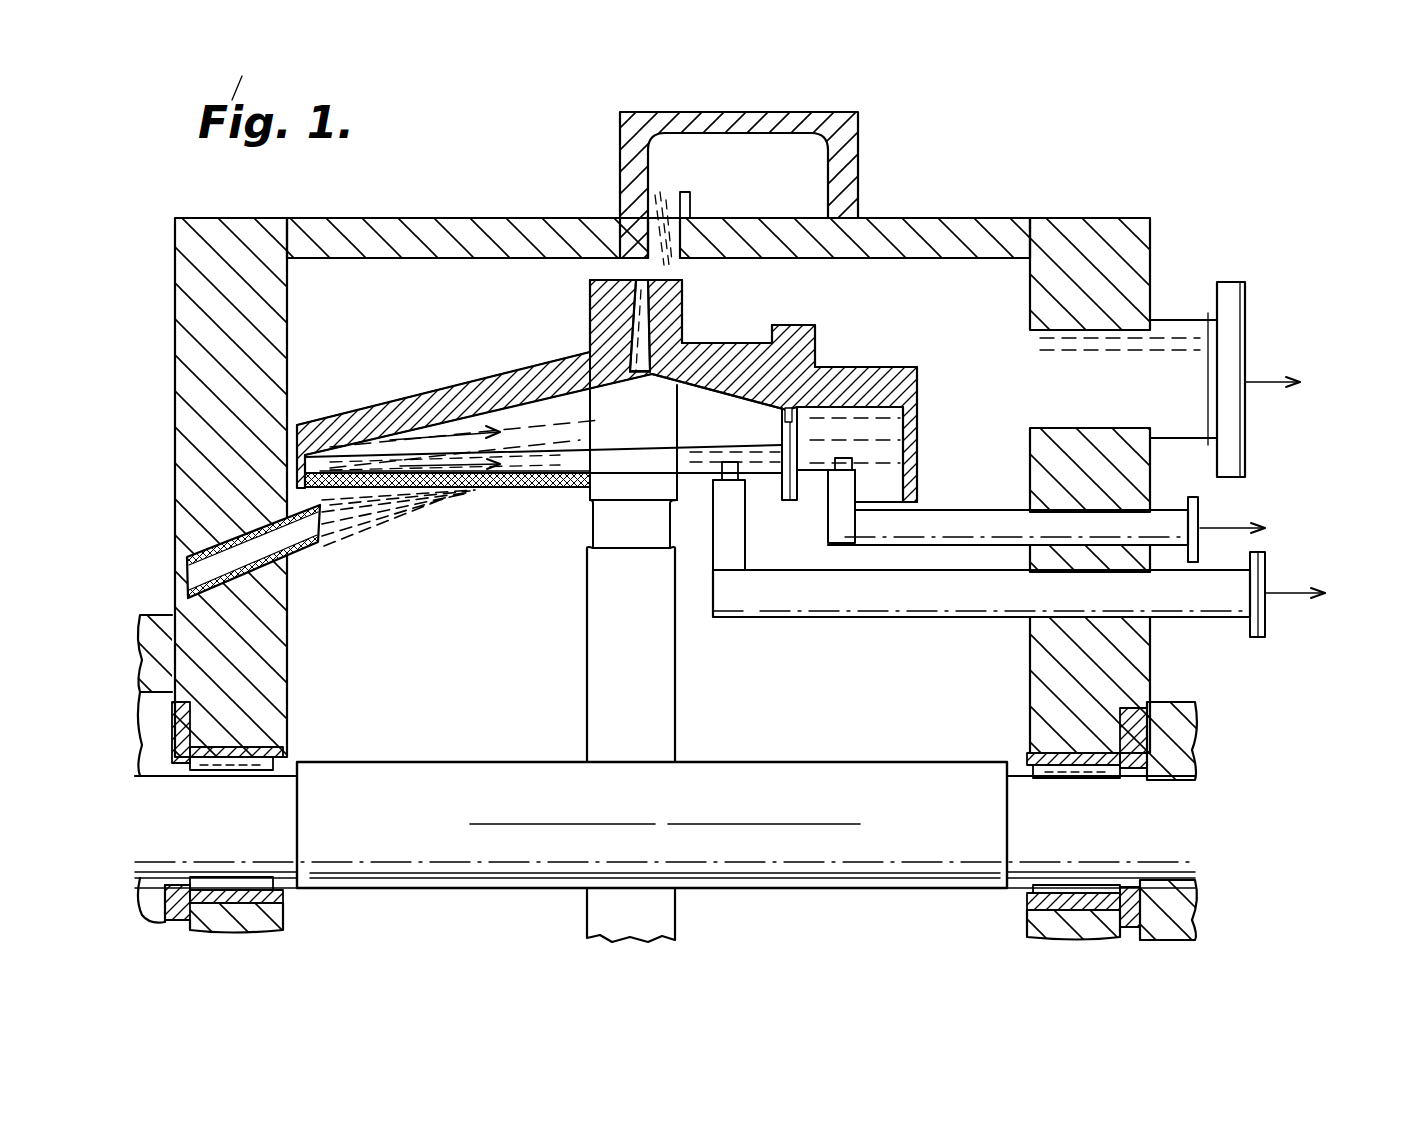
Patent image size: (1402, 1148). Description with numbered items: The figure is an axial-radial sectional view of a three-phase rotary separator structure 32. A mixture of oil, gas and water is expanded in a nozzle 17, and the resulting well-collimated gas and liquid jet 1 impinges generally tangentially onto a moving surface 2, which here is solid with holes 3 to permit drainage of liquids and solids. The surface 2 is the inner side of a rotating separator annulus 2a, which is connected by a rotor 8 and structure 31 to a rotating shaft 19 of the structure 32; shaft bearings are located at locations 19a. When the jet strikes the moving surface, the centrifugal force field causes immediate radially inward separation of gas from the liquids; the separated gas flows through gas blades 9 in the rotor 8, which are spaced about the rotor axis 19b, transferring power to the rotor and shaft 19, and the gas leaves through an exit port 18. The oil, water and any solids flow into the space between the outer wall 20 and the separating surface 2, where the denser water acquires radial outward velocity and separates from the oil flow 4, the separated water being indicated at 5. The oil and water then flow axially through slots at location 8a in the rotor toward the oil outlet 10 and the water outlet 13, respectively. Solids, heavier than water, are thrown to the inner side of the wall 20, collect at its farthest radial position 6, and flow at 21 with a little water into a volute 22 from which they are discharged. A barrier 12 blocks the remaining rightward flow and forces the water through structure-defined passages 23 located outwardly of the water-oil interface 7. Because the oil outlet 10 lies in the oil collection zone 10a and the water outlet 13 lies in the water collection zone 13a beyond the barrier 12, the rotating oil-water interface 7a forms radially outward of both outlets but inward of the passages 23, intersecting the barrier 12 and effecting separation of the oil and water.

The gas and liquid jet 1 is at (352, 513).
The moving surface 2 is at (520, 487).
The rotating separator annulus 2a is at (498, 372).
The holes 3 is at (428, 485).
The oil flow 4 is at (480, 480).
The separated water 5 is at (467, 433).
The farthest radial position of the wall 6 is at (632, 370).
The water-oil interface 7 is at (672, 502).
The oil-water interface 7a is at (763, 440).
The rotor 8 is at (600, 487).
The slots location in rotor 8a is at (695, 360).
The gas blades 9 is at (612, 532).
The oil outlet 10 is at (728, 462).
The oil collection zone 10a is at (708, 467).
The barrier 12 is at (792, 497).
The water outlet 13 is at (885, 462).
The water collection zone 13a is at (918, 410).
The nozzle 17 is at (232, 522).
The exit port 18 is at (1238, 346).
The rotating shaft 19 is at (840, 770).
The shaft bearings 19a is at (228, 762).
The rotor axis 19b is at (500, 824).
The outer wall 20 is at (377, 415).
The solids flow 21 is at (652, 240).
The volute 22 is at (812, 180).
The water passages 23 is at (802, 445).
The structure 31 is at (597, 697).
The three-phase rotary separator structure 32 is at (1165, 240).